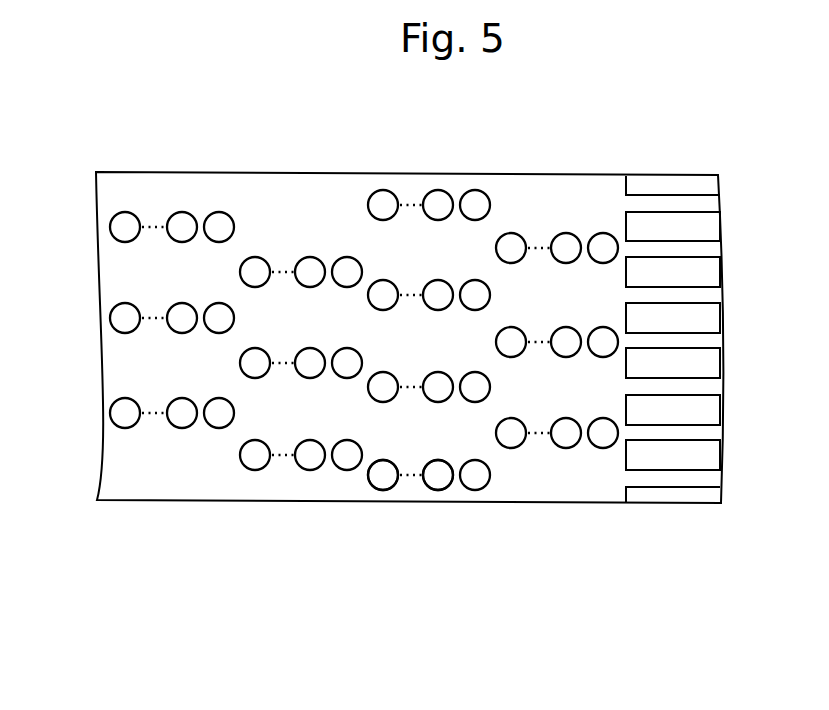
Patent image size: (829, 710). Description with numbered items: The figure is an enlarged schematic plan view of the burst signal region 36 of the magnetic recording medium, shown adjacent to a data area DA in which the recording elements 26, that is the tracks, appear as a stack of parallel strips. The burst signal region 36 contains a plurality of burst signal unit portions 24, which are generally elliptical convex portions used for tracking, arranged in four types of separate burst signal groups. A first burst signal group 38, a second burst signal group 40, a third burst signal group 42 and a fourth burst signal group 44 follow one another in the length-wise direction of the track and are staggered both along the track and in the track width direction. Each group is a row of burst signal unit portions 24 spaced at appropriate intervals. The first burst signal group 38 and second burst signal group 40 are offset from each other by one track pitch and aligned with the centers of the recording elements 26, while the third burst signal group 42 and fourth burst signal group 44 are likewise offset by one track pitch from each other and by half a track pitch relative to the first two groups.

The burst signal unit portion 24 is at (437, 482).
The recording element 26 is at (708, 270).
The burst signal region 36 is at (102, 134).
The first burst signal group 38 is at (108, 227).
The second burst signal group 40 is at (238, 272).
The third burst signal group 42 is at (493, 209).
The fourth burst signal group 44 is at (494, 250).
The data area DA is at (623, 134).